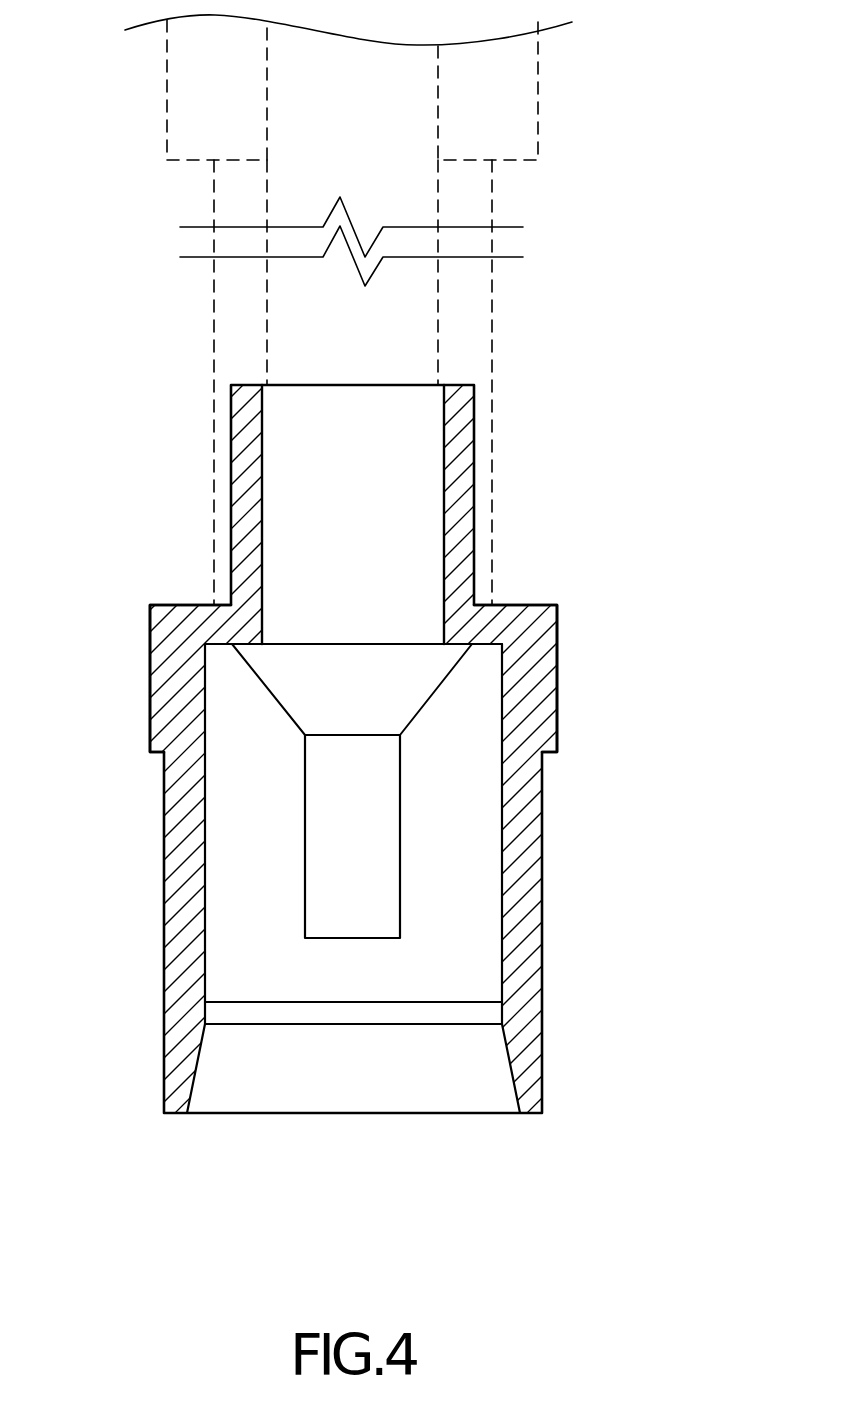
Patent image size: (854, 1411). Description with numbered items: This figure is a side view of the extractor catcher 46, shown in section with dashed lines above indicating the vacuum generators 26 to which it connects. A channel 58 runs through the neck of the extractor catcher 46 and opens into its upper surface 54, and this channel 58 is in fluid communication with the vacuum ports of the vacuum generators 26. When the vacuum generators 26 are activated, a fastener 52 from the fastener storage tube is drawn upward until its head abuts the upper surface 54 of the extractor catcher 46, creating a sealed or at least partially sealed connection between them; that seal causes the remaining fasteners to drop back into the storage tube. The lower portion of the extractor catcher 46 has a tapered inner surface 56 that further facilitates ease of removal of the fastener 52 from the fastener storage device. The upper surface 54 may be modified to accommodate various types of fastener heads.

The vacuum generators 26 is at (165, 97).
The extractor catcher 46 is at (512, 622).
The fastener 52 is at (376, 864).
The upper surface 54 is at (205, 662).
The tapered inner surface 56 is at (507, 1060).
The channel 58 is at (263, 495).